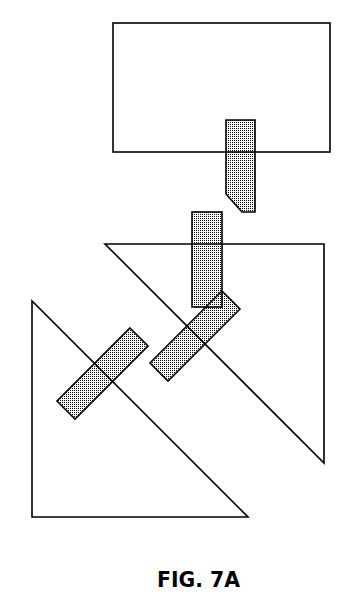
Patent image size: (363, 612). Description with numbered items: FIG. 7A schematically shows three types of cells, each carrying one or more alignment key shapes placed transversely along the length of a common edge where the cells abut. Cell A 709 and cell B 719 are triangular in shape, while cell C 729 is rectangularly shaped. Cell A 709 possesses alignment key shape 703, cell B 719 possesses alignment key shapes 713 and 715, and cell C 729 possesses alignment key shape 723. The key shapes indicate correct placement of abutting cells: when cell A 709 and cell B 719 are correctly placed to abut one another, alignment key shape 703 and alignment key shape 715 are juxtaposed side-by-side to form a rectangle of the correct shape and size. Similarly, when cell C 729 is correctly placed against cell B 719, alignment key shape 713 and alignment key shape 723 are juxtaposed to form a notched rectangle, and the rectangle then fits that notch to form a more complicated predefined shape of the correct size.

The alignment key shape 703 is at (114, 341).
The cell A 709 is at (123, 507).
The alignment key shape 713 is at (191, 234).
The alignment key shape 715 is at (182, 366).
The cell B 719 is at (300, 377).
The alignment key shape 723 is at (256, 172).
The cell C 729 is at (313, 82).